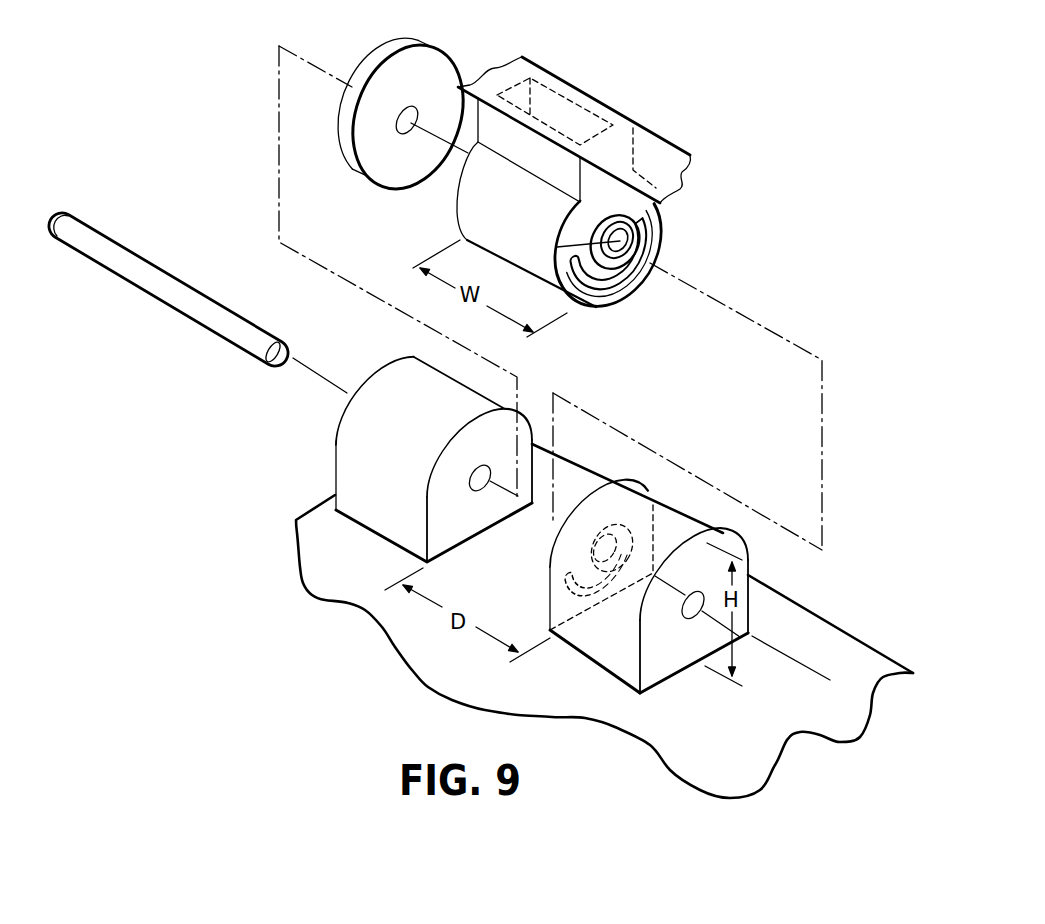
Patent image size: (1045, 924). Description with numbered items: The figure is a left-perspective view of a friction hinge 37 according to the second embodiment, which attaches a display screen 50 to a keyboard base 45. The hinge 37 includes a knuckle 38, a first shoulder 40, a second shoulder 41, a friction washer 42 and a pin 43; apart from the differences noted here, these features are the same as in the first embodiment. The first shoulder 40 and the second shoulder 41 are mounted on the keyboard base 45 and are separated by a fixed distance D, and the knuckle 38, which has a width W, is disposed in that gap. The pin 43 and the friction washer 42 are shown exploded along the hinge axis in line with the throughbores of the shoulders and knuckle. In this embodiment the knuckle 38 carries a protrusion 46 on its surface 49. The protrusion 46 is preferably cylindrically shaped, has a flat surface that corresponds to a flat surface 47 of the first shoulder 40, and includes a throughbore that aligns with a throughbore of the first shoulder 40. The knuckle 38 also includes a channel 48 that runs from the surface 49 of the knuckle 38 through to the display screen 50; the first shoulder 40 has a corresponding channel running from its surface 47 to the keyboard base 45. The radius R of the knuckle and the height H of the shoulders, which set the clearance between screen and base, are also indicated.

The hinge 37 is at (855, 183).
The knuckle 38 is at (597, 191).
The first shoulder 40 is at (615, 584).
The second shoulder 41 is at (350, 447).
The friction washer 42 is at (385, 67).
The pin 43 is at (137, 275).
The keyboard base 45 is at (795, 632).
The protrusion 46 is at (653, 243).
The surface of first shoulder 47 is at (550, 600).
The channel 48 is at (583, 283).
The surface of knuckle 49 is at (648, 212).
The display screen 50 is at (648, 157).